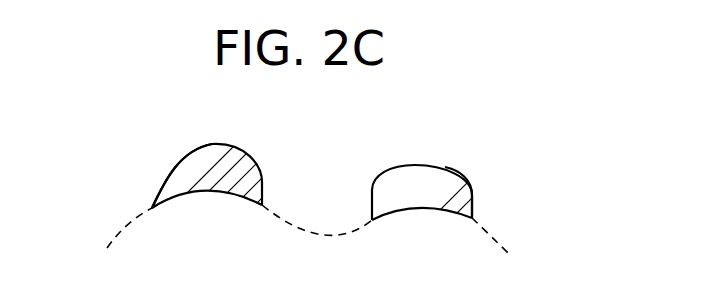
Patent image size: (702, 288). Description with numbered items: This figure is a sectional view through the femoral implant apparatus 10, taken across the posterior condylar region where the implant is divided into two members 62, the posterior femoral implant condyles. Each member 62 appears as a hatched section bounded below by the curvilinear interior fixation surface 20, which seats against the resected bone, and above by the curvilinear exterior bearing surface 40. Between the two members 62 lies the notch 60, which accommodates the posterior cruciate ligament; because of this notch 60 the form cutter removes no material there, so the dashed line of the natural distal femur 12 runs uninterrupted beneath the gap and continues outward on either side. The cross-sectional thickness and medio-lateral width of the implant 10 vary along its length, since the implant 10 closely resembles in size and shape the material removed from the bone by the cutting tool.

The implant apparatus 10 is at (457, 126).
The natural distal femur 12 is at (500, 240).
The curvilinear interior fixation surface 20 is at (198, 200).
The curvilinear exterior bearing surface 40 is at (175, 146).
The notch 60 is at (323, 205).
The members 62 is at (140, 158).